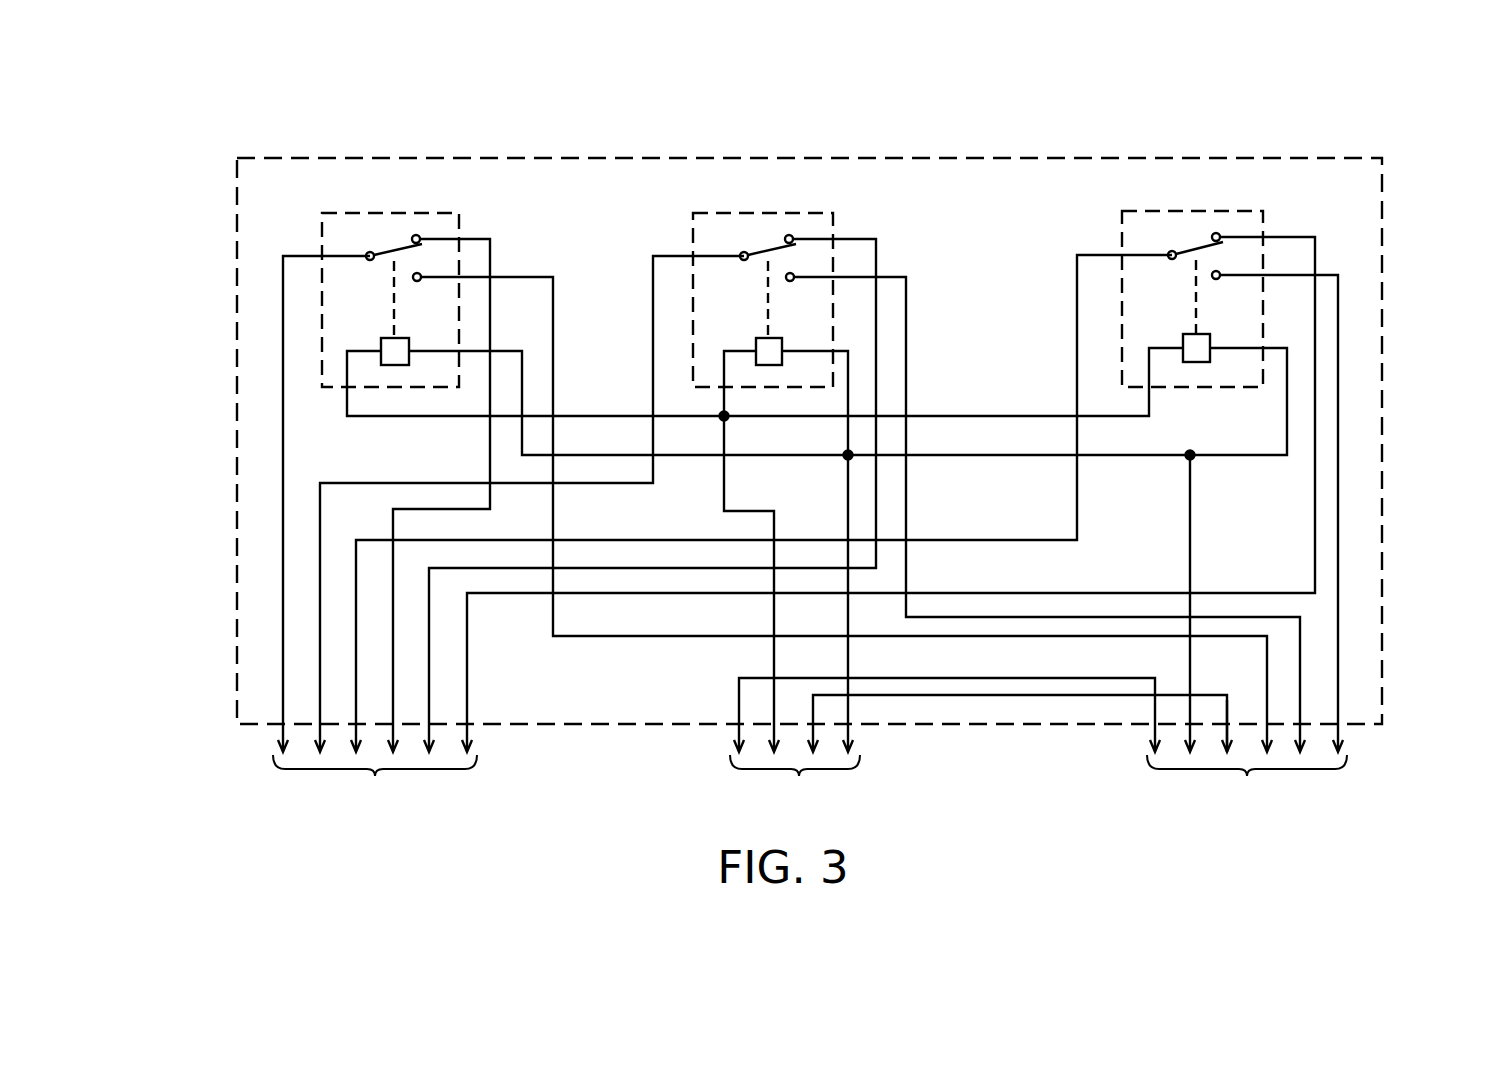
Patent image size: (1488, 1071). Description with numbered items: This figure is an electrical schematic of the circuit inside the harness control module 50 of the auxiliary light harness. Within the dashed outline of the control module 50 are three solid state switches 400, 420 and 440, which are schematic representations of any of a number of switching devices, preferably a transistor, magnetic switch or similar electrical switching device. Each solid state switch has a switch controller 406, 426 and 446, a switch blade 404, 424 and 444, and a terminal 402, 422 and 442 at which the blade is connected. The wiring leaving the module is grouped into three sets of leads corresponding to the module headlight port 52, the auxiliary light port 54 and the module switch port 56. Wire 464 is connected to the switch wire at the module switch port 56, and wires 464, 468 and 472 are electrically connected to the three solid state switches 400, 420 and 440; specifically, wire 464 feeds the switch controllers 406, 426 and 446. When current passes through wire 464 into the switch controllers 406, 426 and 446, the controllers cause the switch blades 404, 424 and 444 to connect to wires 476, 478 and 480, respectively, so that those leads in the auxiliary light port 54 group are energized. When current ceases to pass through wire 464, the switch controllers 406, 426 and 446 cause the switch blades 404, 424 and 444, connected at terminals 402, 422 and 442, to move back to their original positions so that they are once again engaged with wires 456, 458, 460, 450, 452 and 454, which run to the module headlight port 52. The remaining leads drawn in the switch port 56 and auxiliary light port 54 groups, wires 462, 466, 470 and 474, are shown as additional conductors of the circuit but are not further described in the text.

The harness control module 50 is at (352, 157).
The solid state switch 400 is at (342, 235).
The terminal 402 is at (367, 252).
The switch blade 404 is at (384, 251).
The switch controller 406 is at (381, 346).
The solid state switch 420 is at (727, 235).
The terminal 422 is at (741, 252).
The switch blade 424 is at (758, 251).
The switch controller 426 is at (758, 345).
The solid state switch 440 is at (1160, 241).
The terminal 442 is at (1170, 252).
The switch blade 444 is at (1190, 250).
The switch controller 446 is at (1185, 343).
The wire 450 is at (283, 645).
The wire 452 is at (320, 614).
The wire 454 is at (356, 583).
The wire 456 is at (393, 612).
The wire 458 is at (429, 658).
The wire 460 is at (467, 698).
The output line 462 is at (739, 705).
The wire 464 is at (774, 650).
The output line 466 is at (813, 705).
The wire 468 is at (848, 716).
The output line 470 is at (1155, 710).
The wire 472 is at (1190, 658).
The output line 474 is at (1227, 722).
The wire 476 is at (1035, 636).
The wire 478 is at (1300, 678).
The wire 480 is at (1338, 636).
The module headlight port 52 is at (375, 783).
The auxiliary light port 54 is at (1247, 782).
The module switch port 56 is at (795, 783).